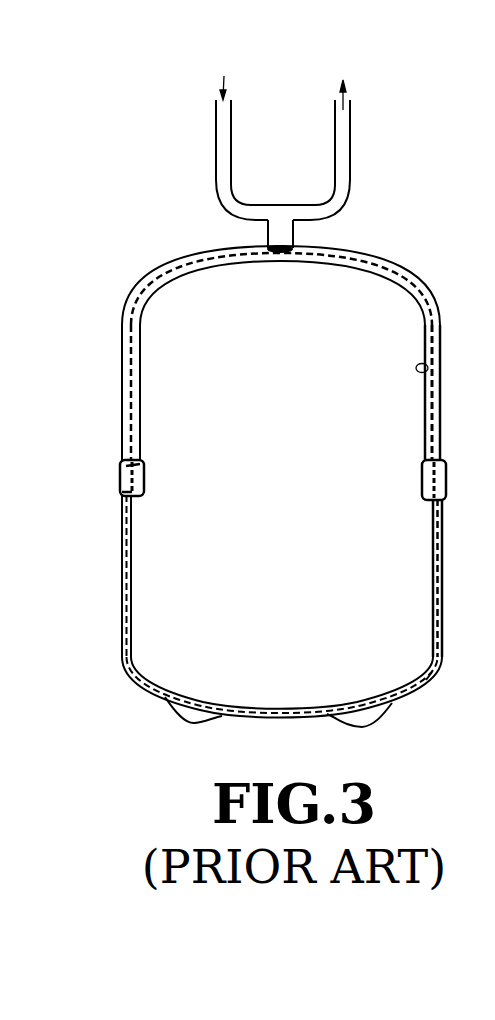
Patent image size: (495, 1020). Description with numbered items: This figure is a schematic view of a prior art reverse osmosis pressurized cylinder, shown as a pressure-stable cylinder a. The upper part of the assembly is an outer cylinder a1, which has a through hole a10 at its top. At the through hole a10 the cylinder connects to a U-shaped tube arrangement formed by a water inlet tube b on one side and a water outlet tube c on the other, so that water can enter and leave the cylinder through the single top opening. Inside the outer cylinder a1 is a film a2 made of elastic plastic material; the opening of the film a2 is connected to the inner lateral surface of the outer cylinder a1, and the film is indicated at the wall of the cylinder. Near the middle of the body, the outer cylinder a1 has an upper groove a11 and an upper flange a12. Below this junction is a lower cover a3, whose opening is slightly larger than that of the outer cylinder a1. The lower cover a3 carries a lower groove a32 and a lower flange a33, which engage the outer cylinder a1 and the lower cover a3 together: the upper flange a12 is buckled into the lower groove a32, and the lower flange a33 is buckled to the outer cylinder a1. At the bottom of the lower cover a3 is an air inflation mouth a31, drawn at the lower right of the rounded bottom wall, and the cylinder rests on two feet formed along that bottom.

The pressure-stable cylinder a is at (273, 470).
The outer cylinder a1 is at (439, 333).
The film a2 is at (428, 368).
The lower cover a3 is at (130, 676).
The through hole a10 is at (300, 233).
The upper groove a11 is at (126, 465).
The upper flange a12 is at (131, 498).
The air inflation mouth a31 is at (429, 688).
The lower groove a32 is at (123, 493).
The lower flange a33 is at (128, 468).
The water inlet tube b is at (218, 161).
The water outlet tube c is at (352, 175).